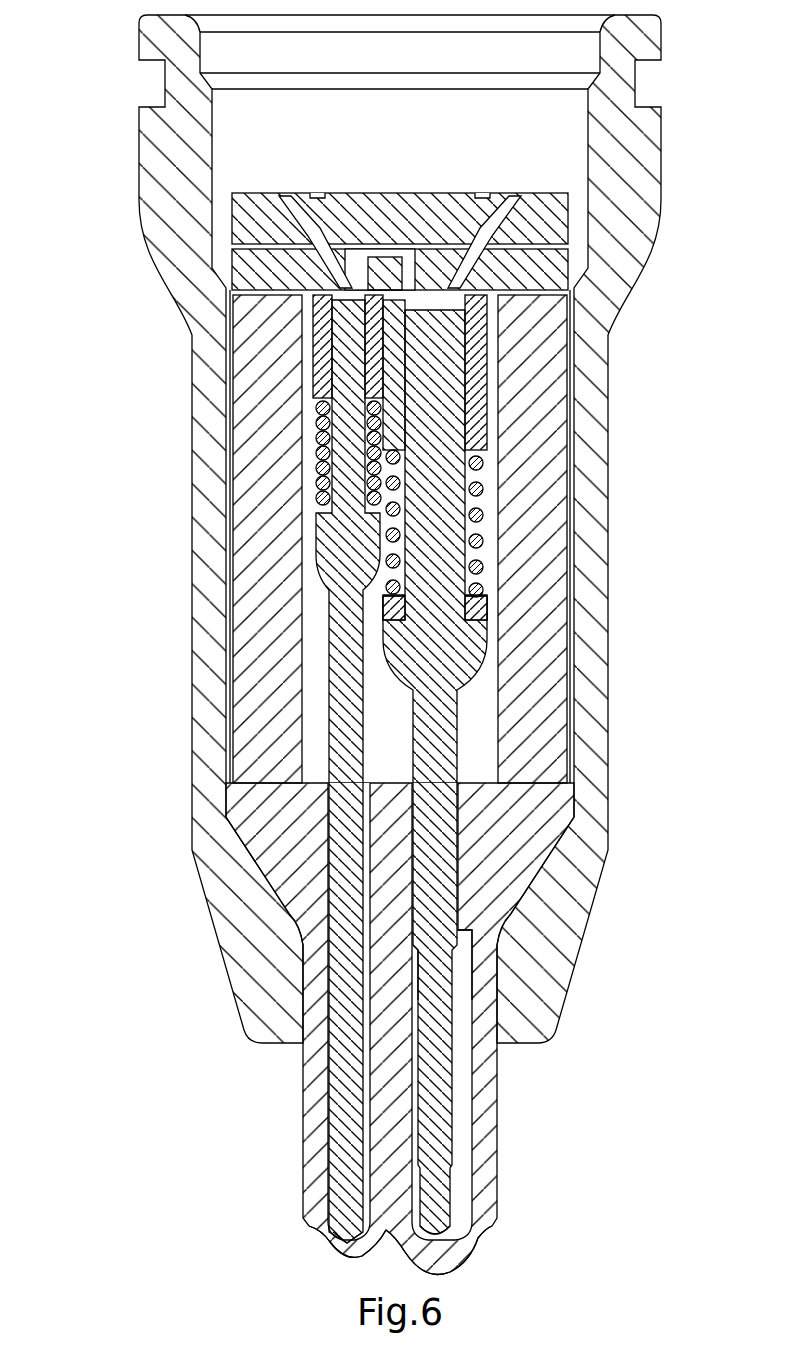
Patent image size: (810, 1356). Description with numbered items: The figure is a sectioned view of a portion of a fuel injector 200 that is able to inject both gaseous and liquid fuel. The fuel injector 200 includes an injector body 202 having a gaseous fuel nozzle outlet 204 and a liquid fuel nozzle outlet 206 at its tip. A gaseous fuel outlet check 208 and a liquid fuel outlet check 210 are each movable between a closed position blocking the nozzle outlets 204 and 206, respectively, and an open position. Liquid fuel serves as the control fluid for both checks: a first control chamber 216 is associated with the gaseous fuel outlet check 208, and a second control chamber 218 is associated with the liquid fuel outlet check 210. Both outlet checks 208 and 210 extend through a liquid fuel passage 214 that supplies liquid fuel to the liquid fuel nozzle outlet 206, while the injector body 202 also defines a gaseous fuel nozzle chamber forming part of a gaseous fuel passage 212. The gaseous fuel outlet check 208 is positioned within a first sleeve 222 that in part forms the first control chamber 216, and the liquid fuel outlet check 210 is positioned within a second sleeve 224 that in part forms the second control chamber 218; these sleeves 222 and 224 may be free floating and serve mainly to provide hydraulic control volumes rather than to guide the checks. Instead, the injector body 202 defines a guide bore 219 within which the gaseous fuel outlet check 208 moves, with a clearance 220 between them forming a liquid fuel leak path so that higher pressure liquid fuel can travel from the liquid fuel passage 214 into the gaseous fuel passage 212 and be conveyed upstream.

The fuel injector 200 is at (62, 125).
The injector body 202 is at (173, 279).
The gaseous fuel nozzle outlet 204 is at (478, 1240).
The liquid fuel nozzle outlet 206 is at (332, 1238).
The gaseous fuel outlet check 208 is at (442, 1128).
The liquid fuel outlet check 210 is at (343, 1132).
The gaseous fuel passage 212 is at (465, 1083).
The liquid fuel passage 214 is at (312, 600).
The first control chamber 216 is at (445, 280).
The second control chamber 218 is at (335, 280).
The guide bore 219 is at (456, 832).
The clearance 220 is at (462, 915).
The first sleeve 222 is at (480, 373).
The second sleeve 224 is at (322, 368).